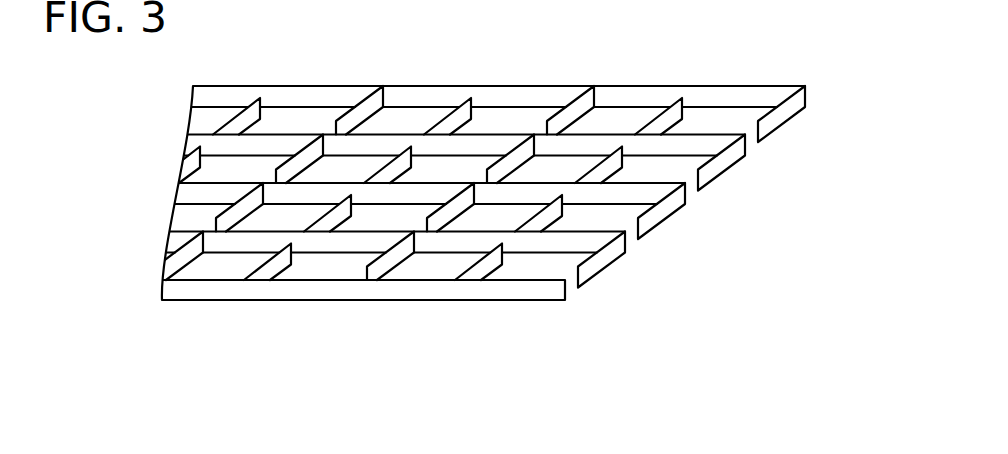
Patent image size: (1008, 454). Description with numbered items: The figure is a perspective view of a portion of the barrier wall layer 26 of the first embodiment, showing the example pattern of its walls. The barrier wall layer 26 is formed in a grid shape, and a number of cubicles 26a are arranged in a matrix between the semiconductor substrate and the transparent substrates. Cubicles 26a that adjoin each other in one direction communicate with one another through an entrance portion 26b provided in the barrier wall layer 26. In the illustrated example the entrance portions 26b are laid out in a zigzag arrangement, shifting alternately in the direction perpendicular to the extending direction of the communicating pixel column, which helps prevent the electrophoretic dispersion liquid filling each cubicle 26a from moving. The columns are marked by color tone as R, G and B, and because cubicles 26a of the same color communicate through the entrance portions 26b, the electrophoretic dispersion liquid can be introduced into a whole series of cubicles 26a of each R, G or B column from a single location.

The barrier wall layer 26 is at (548, 86).
The cubicle 26a is at (726, 107).
The entrance portion 26b is at (474, 97).
The red cubicle column R is at (770, 140).
The green cubicle column G is at (710, 188).
The blue cubicle column B is at (650, 237).